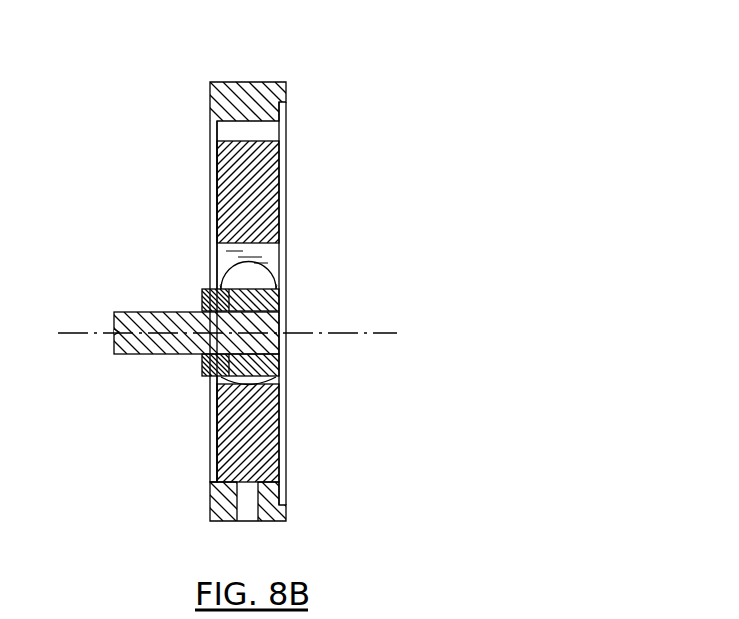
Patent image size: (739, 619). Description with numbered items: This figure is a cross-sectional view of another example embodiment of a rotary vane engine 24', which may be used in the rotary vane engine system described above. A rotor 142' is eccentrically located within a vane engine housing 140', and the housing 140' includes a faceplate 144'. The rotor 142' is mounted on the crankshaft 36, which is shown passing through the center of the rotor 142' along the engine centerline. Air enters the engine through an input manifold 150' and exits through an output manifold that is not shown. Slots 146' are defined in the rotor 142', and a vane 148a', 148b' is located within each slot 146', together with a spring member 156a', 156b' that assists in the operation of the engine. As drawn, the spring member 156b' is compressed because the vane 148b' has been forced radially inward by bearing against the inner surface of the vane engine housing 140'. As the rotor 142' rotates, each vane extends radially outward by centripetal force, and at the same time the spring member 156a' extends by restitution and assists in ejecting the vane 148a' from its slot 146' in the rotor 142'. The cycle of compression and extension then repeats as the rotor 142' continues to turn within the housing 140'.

The rotary vane engine 24' is at (242, 268).
The crankshaft 36 is at (140, 311).
The vane engine housing 140' is at (272, 248).
The rotor 142' is at (293, 332).
The faceplate 144' is at (333, 302).
The slot 146' is at (162, 301).
The vane 148a' is at (251, 192).
The vane 148b' is at (275, 433).
The input manifold 150' is at (219, 501).
The spring member 156a' is at (311, 248).
The spring member 156b' is at (317, 382).